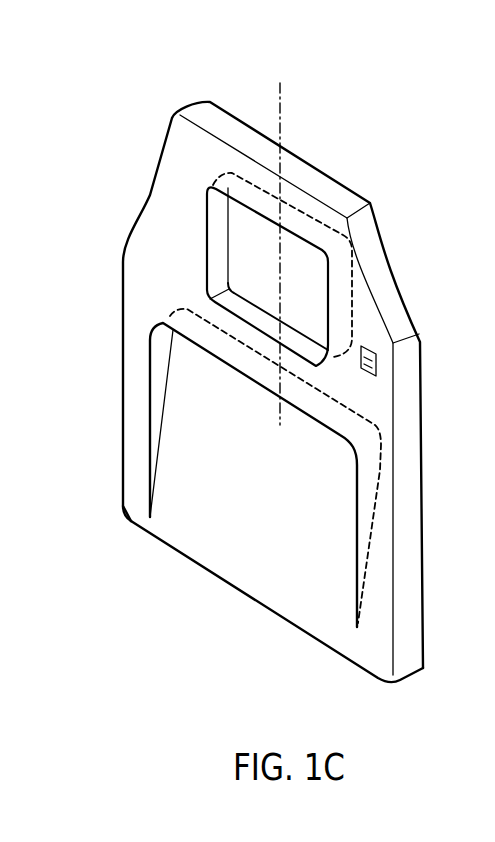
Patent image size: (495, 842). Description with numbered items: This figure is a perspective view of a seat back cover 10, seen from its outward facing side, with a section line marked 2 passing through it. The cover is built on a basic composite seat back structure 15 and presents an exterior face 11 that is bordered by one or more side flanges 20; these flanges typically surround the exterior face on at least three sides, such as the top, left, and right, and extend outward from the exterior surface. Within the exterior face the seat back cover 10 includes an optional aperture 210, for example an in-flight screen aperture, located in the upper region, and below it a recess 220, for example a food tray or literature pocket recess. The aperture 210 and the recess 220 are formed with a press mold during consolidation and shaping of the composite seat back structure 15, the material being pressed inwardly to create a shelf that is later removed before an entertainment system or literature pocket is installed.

The section line 2- 2 is at (249, 412).
The seat back cover 10 is at (112, 404).
The exterior face 11 is at (140, 277).
The seat back structure 15 is at (415, 690).
The side flange 20 is at (316, 178).
The aperture 210 is at (190, 229).
The recess 220 is at (210, 530).